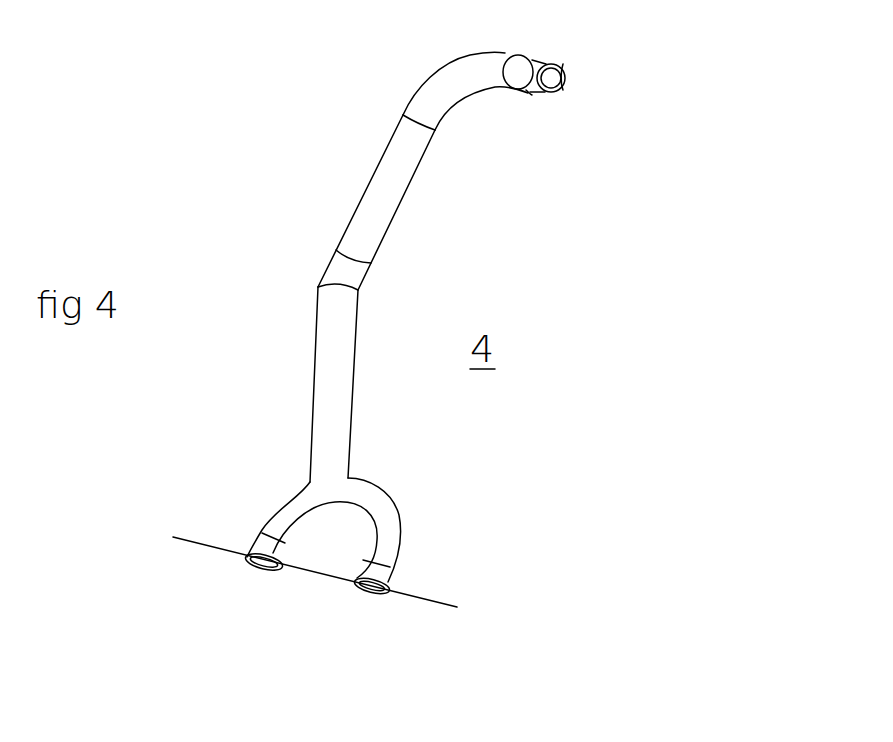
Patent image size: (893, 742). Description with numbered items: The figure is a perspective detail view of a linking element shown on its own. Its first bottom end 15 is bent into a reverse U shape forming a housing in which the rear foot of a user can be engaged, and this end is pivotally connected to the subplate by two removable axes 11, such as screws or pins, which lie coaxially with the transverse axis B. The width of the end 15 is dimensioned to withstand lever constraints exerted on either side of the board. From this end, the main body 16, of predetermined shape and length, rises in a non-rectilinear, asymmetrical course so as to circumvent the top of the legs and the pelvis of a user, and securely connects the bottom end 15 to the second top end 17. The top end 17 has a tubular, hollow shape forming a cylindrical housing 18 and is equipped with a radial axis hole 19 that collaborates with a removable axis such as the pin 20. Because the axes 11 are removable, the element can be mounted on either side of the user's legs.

The removable axes 11 is at (277, 572).
The first bottom end 15 is at (385, 500).
The main body 16 is at (378, 195).
The second top end 17 is at (563, 60).
The cylindrical housing 18 is at (563, 90).
The radial axis hole 19 is at (532, 92).
The pin 20 is at (528, 76).
The transverse axis B is at (198, 537).